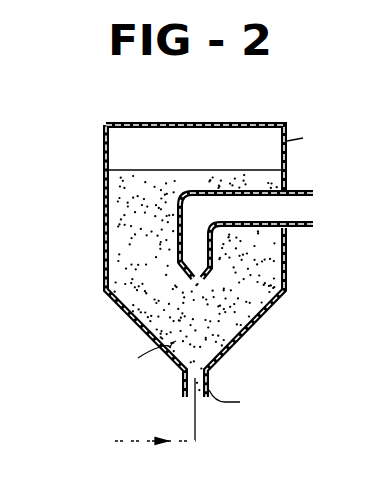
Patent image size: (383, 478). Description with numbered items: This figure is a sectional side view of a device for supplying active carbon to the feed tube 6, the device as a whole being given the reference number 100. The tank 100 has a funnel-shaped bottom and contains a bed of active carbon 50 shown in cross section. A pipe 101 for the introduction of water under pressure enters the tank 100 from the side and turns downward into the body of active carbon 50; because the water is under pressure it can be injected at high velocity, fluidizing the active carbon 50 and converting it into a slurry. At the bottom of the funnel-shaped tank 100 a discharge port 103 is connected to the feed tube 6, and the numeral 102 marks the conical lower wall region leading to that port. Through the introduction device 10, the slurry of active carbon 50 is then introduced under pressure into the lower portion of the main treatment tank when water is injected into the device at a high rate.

The introduction device 10 is at (101, 258).
The active carbon 50 is at (118, 188).
The tank 100 is at (315, 140).
The pipe 101 is at (303, 228).
The conical bottom wall 102 is at (140, 355).
The discharge port 103 is at (245, 403).
The feed tube 6 is at (140, 438).